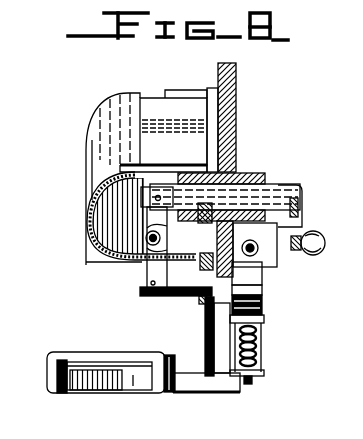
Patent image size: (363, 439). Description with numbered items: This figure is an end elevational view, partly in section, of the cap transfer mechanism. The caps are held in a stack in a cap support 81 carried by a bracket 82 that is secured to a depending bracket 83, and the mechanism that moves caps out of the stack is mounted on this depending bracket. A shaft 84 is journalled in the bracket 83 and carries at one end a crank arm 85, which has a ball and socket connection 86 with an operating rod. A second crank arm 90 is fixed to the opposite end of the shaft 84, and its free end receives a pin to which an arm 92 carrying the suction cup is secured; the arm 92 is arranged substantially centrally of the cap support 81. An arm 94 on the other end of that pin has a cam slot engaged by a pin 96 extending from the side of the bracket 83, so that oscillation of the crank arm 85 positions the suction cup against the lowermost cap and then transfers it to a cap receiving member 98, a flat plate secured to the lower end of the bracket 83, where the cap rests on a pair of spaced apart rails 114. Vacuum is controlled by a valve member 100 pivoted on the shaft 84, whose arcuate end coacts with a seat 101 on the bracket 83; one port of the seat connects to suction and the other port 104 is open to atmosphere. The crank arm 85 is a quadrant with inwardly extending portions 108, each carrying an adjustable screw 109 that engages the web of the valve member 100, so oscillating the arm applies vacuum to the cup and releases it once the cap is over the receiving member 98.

The cap support 81 is at (97, 156).
The bracket 82 is at (212, 88).
The depending bracket 83 is at (235, 106).
The shaft 84 is at (257, 173).
The crank arm 85 is at (292, 228).
The ball and socket connection 86 is at (325, 244).
The second crank arm 90 is at (172, 295).
The arm 92 is at (150, 263).
The arm 94 is at (201, 304).
The pin 96 is at (184, 296).
The cap receiving member 98 is at (49, 379).
The valve member 100 is at (257, 272).
The seat 101 is at (263, 302).
The port 104 is at (265, 293).
The inwardly extending portions 108 is at (290, 260).
The adjustable screw 109 is at (258, 244).
The rails 114 is at (50, 393).